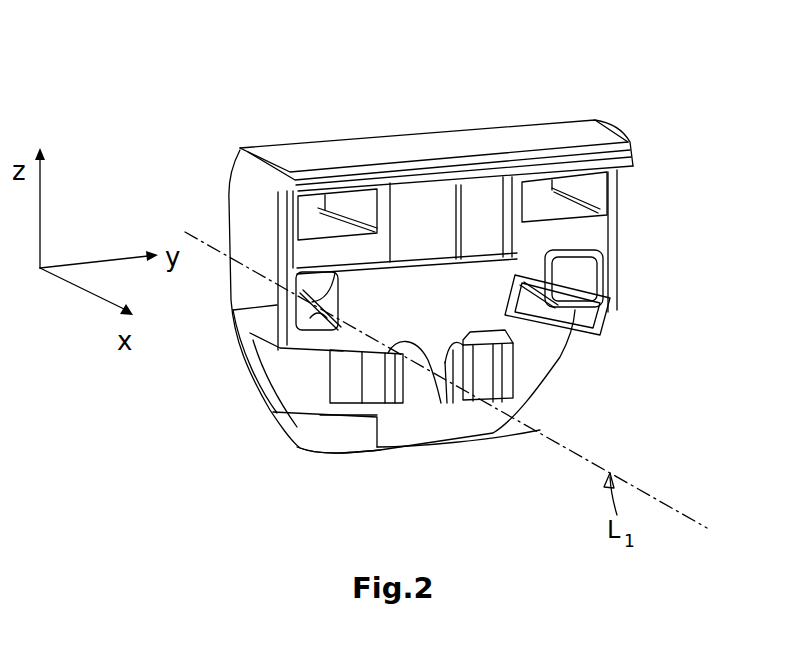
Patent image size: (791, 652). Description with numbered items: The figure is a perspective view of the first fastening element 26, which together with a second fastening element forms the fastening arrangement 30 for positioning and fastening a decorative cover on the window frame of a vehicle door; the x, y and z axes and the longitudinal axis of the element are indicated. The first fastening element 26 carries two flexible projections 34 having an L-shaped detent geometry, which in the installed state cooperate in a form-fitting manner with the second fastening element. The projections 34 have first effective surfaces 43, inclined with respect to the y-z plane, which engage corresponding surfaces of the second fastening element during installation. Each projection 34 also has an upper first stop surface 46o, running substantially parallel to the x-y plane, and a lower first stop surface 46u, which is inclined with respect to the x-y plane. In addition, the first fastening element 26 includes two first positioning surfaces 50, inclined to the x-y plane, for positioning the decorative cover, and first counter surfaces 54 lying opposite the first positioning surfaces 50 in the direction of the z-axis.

The first fastening element 26 is at (120, 80).
The fastening arrangement 30 is at (431, 286).
The flexible projections 34 is at (347, 390).
The first effective surfaces 43 is at (439, 372).
The upper first stop surface 46o is at (370, 365).
The lower first stop surface 46u is at (387, 413).
The first positioning surfaces 50 is at (328, 290).
The first counter surfaces 54 is at (300, 323).